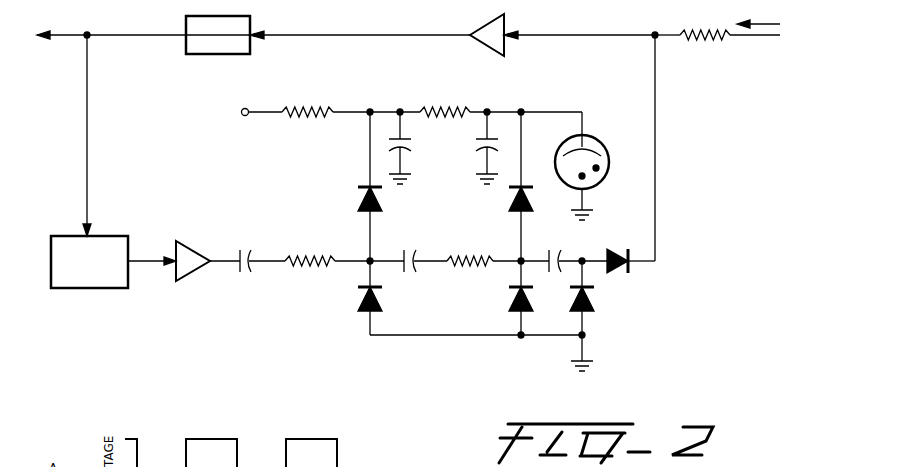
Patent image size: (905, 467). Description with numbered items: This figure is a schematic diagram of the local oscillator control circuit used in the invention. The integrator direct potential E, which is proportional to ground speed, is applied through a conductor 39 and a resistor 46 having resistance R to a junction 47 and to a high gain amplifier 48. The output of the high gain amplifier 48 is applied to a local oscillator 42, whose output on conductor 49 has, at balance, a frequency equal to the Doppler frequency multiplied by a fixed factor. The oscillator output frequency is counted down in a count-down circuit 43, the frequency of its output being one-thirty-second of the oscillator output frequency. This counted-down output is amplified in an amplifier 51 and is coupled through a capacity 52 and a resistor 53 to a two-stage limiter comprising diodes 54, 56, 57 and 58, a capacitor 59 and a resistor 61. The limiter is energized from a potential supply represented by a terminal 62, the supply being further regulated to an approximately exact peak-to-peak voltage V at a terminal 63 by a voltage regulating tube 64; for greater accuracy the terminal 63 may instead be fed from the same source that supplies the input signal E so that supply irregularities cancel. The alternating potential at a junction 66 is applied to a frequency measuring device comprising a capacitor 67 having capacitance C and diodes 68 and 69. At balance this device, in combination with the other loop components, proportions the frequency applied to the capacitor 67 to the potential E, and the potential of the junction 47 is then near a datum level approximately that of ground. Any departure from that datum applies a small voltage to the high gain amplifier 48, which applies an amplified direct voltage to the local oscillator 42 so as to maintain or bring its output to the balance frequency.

The conductor 39 is at (766, 36).
The local oscillator 42 is at (198, 54).
The count-down circuit 43 is at (109, 236).
The resistor 46 is at (702, 28).
The junction 47 is at (654, 33).
The high gain amplifier 48 is at (490, 25).
The conductor 49 is at (57, 35).
The amplifier 51 is at (190, 243).
The capacity 52 is at (246, 274).
The resistor 53 is at (302, 252).
The diode 54 is at (358, 203).
The diode 56 is at (358, 300).
The diode 57 is at (509, 204).
The diode 58 is at (509, 300).
The capacitor 59 is at (412, 276).
The resistor 61 is at (468, 254).
The terminal 62 is at (246, 116).
The terminal 63 is at (521, 114).
The voltage regulating tube 64 is at (599, 138).
The junction 66 is at (519, 258).
The capacitor 67 is at (560, 252).
The diode 68 is at (596, 302).
The diode 69 is at (632, 268).